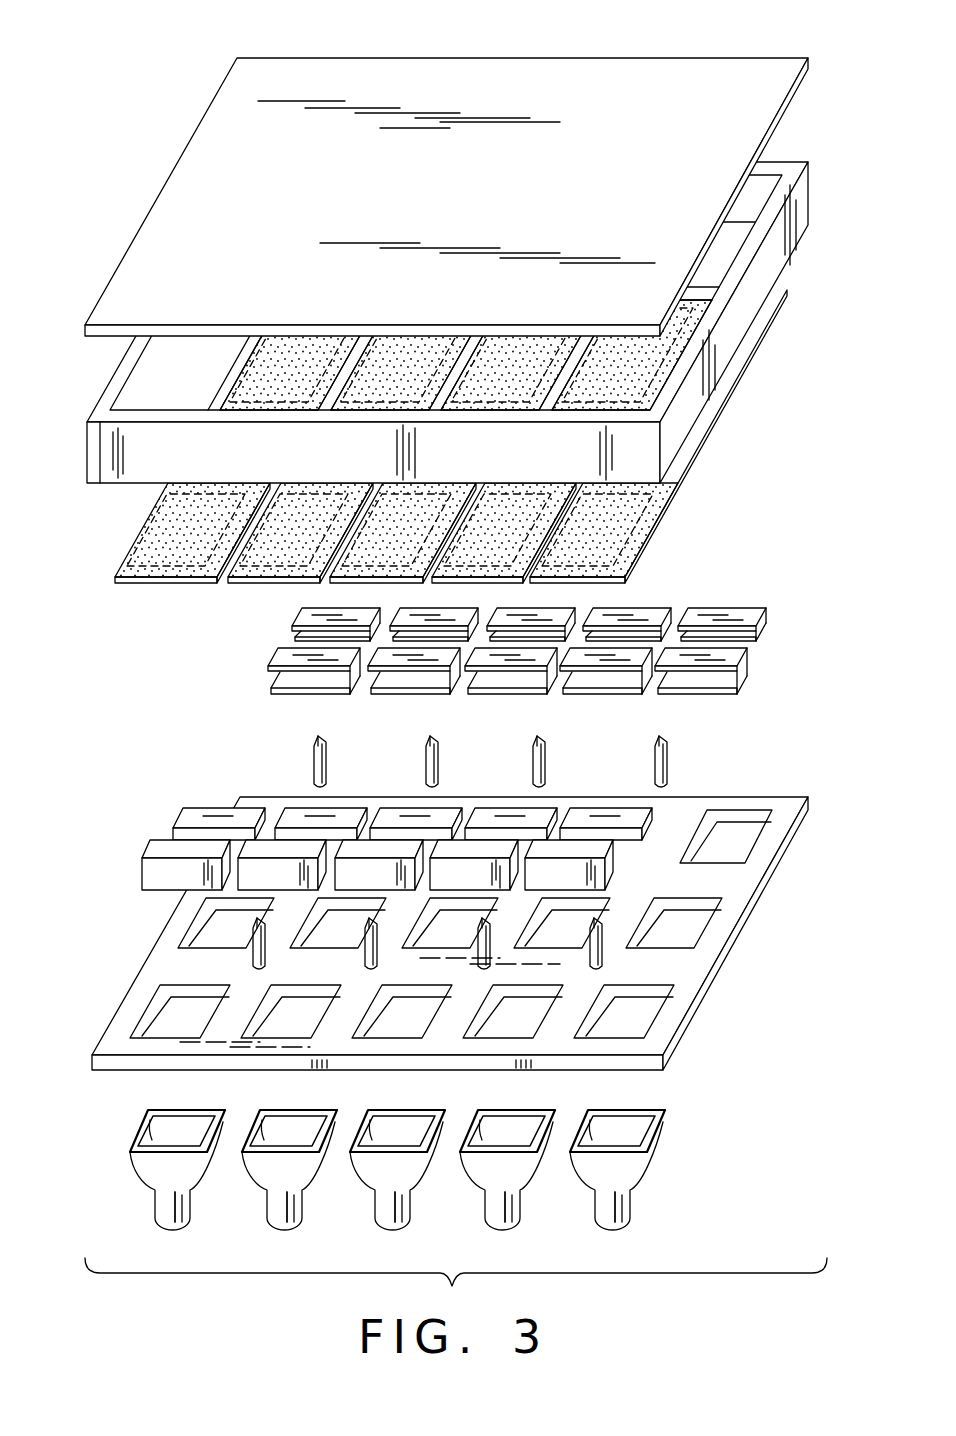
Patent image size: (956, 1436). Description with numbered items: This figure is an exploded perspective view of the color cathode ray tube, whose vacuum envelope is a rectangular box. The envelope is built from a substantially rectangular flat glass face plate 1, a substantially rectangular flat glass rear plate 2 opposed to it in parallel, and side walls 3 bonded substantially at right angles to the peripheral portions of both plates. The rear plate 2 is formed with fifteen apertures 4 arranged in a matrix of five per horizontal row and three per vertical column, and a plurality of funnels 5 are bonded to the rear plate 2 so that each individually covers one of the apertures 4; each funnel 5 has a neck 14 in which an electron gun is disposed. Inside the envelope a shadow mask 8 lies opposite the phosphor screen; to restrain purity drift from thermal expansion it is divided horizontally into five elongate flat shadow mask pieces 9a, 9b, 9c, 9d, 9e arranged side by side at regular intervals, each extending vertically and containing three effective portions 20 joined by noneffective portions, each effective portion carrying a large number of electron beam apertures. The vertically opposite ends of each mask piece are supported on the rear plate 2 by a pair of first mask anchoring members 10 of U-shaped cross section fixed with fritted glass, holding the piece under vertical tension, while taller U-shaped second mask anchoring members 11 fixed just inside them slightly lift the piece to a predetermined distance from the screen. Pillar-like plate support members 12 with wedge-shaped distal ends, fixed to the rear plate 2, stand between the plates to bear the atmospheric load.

The face plate 1 is at (718, 52).
The rear plate 2 is at (463, 933).
The side walls 3 is at (463, 362).
The apertures 4 is at (690, 928).
The funnels 5 is at (403, 1181).
The shadow mask 8 is at (451, 464).
The shadow mask piece 9a is at (165, 585).
The shadow mask piece 9b is at (260, 585).
The shadow mask piece 9c is at (385, 583).
The shadow mask piece 9d is at (470, 583).
The shadow mask piece 9e is at (585, 583).
The first mask anchoring members 10 is at (655, 608).
The second mask anchoring members 11 is at (750, 690).
The plate support members 12 is at (680, 760).
The neck 14 is at (185, 1207).
The effective portions 20 is at (250, 378).